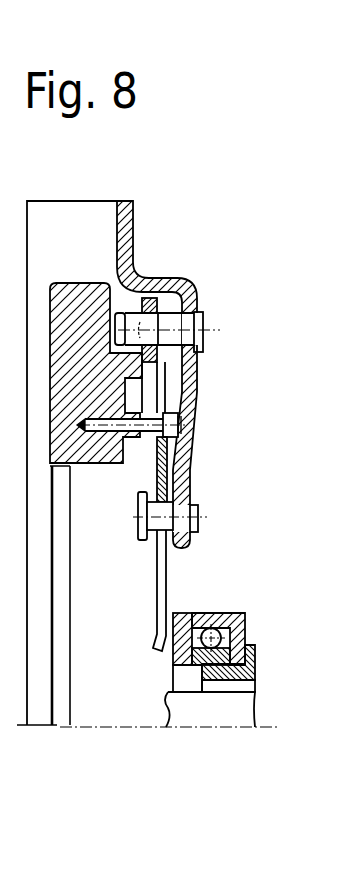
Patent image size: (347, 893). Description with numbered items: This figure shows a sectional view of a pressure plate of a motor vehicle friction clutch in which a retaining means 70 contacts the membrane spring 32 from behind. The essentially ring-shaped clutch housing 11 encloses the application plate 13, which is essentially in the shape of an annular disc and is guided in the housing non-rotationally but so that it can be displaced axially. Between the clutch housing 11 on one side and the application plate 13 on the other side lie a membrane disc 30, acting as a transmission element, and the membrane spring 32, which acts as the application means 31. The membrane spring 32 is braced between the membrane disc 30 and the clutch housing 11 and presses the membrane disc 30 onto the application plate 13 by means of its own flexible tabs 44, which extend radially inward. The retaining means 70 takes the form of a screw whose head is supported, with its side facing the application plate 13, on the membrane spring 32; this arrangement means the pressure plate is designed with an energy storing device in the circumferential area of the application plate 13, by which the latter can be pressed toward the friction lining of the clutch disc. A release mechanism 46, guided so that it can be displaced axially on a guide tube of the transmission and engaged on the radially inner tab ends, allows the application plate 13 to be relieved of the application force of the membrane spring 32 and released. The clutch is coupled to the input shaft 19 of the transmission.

The clutch housing 11 is at (123, 224).
The application plate 13 is at (67, 299).
The membrane disc 30 is at (160, 297).
The retaining means 70 is at (180, 430).
The membrane spring 32 is at (175, 470).
The application means 31 is at (171, 561).
The flexible tabs 44 is at (166, 584).
The release mechanism 46 is at (240, 613).
The input shaft 19 is at (244, 720).